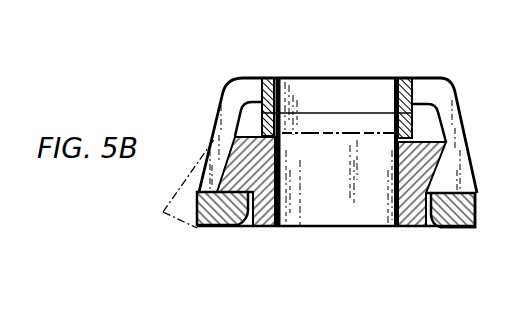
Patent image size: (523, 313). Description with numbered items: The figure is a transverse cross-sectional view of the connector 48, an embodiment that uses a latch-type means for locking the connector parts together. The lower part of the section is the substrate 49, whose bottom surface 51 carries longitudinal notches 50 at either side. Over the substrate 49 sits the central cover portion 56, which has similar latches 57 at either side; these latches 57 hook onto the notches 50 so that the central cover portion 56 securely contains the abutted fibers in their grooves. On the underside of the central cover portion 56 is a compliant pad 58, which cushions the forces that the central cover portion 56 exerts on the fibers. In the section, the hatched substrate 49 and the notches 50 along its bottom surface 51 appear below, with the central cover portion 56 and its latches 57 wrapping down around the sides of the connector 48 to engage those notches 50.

The connector 48 is at (337, 47).
The substrate 49 is at (258, 227).
The longitudinal notches 50 is at (246, 222).
The bottom surface 51 is at (410, 228).
The central cover portion 56 is at (443, 92).
The latches 57 is at (464, 228).
The compliant pad 58 is at (351, 119).